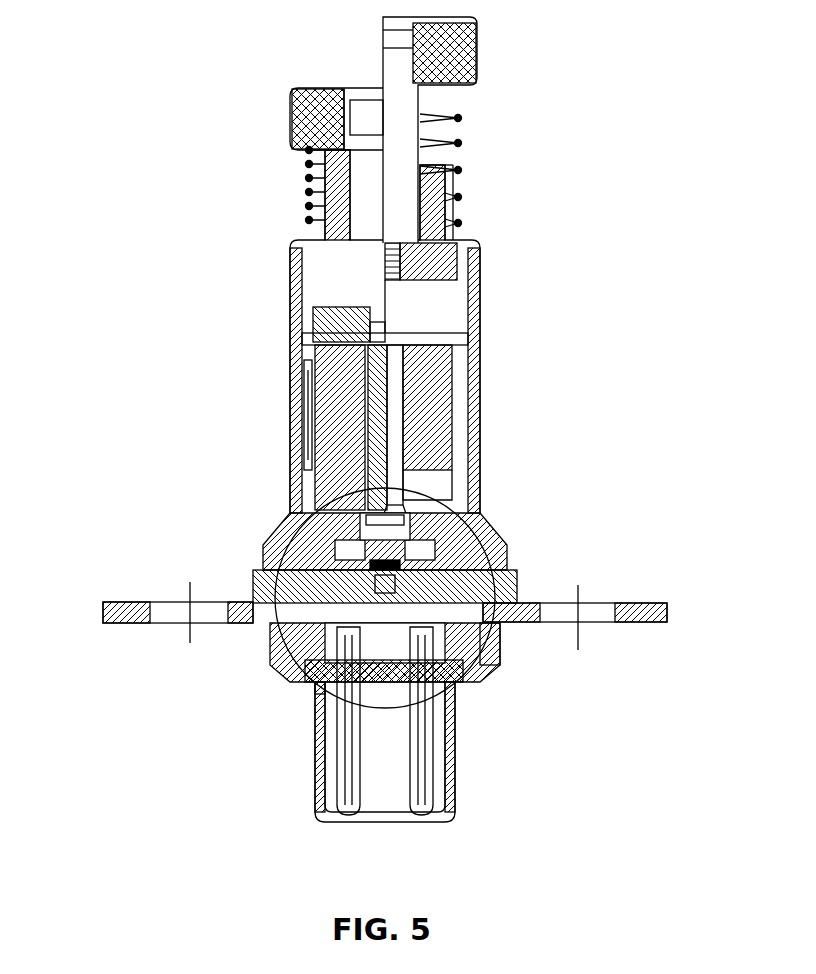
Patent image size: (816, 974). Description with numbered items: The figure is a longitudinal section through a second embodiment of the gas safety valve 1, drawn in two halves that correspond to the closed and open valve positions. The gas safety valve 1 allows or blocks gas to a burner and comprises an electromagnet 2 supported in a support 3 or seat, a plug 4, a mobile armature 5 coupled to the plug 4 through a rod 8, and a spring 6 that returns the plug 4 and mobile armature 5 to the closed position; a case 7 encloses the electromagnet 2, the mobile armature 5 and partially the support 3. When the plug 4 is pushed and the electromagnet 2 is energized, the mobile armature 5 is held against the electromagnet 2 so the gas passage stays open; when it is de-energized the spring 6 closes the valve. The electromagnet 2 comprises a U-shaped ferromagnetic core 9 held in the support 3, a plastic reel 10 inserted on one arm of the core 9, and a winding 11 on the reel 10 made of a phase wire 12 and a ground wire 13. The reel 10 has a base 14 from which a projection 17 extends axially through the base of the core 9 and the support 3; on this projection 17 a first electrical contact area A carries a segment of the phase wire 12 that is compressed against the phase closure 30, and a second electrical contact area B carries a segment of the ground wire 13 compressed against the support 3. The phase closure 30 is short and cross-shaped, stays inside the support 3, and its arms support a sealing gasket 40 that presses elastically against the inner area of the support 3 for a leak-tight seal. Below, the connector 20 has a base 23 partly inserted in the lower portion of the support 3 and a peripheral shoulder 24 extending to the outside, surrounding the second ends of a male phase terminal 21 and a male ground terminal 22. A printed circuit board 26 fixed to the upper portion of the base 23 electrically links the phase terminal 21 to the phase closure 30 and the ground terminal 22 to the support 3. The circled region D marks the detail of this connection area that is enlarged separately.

The gas safety valve 1 is at (632, 263).
The electromagnet 2 is at (478, 418).
The support 3 is at (268, 623).
The plug 4 is at (290, 115).
The mobile armature 5 is at (303, 313).
The spring 6 is at (308, 183).
The case 7 is at (482, 245).
The rod 8 is at (395, 133).
The core 9 is at (420, 372).
The reel 10 is at (302, 365).
The winding 11 is at (312, 424).
The phase wire 12 is at (265, 625).
The ground wire 13 is at (320, 530).
The base 14 is at (322, 462).
The projection 17 is at (503, 637).
The connector 20 is at (486, 742).
The phase terminal 21 is at (350, 775).
The ground terminal 22 is at (425, 782).
The base 23 is at (290, 685).
The peripheral shoulder 24 is at (455, 770).
The printed circuit board 26 is at (470, 660).
The phase closure 30 is at (315, 690).
The sealing gasket 40 is at (470, 566).
The first electrical contact area A is at (587, 618).
The second electrical contact area B is at (395, 522).
The detail D is at (500, 537).